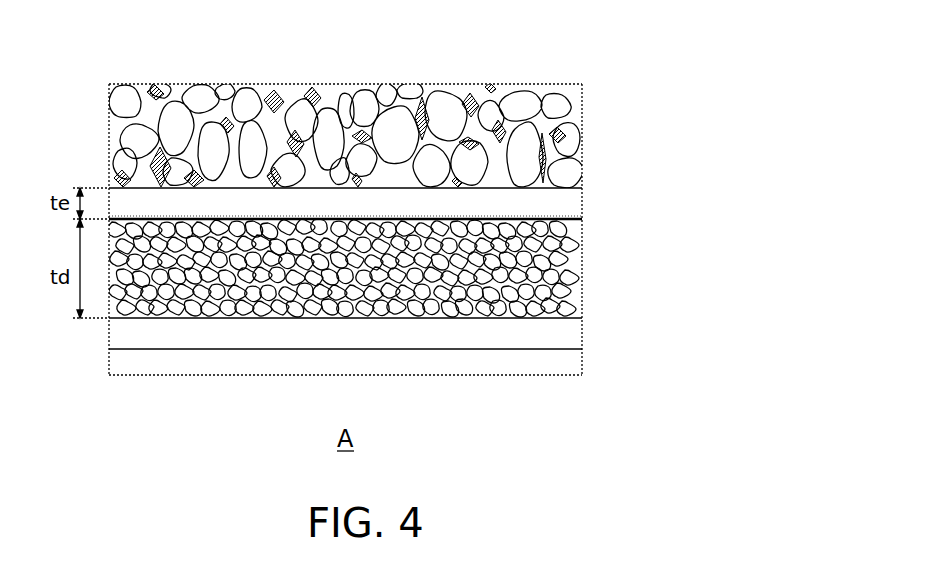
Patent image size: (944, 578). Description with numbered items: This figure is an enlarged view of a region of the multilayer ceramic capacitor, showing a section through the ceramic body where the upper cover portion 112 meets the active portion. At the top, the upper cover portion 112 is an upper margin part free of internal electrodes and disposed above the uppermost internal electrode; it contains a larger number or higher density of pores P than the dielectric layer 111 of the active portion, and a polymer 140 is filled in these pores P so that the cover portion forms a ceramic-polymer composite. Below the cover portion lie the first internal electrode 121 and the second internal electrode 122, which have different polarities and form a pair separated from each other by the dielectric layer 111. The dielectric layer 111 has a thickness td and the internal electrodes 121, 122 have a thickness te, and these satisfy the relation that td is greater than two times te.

The polymer 140 is at (149, 84).
The pores P is at (284, 82).
The upper cover portion 112 is at (574, 142).
The first internal electrode 121 is at (574, 206).
The dielectric layer 111 is at (578, 265).
The second internal electrode 122 is at (574, 328).